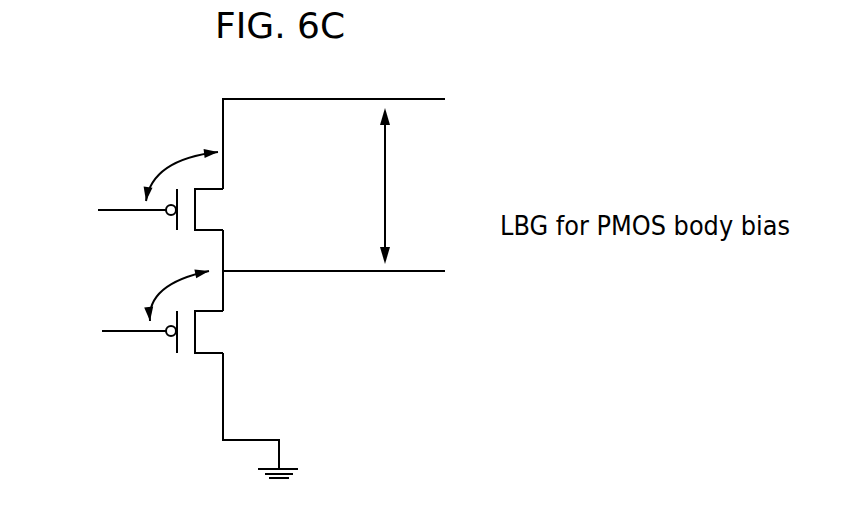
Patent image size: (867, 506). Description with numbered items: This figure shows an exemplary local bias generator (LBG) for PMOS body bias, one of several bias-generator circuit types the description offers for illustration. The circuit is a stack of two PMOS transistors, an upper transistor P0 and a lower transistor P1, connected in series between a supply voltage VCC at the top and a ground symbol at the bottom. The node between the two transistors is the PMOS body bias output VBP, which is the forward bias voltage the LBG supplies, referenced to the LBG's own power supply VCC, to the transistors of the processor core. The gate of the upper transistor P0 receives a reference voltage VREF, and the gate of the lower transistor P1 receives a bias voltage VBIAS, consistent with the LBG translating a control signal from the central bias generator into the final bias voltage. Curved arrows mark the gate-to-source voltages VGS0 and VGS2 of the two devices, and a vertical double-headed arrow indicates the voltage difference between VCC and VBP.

The supply voltage node VCC is at (445, 101).
The PMOS body bias voltage node VBP is at (445, 274).
The first PMOS transistor P0 is at (213, 209).
The second PMOS transistor P1 is at (216, 332).
The reference voltage input VREF is at (113, 214).
The bias voltage input VBIAS is at (114, 335).
The gate-source voltage of P0 VGS0 is at (175, 163).
The gate-source voltage of P1 VGS2 is at (162, 285).